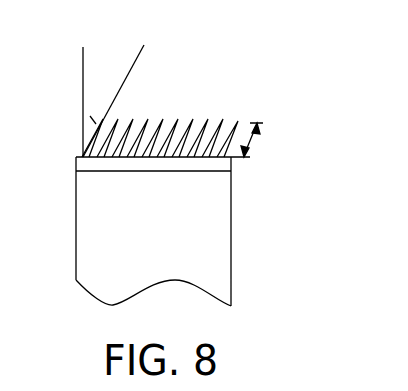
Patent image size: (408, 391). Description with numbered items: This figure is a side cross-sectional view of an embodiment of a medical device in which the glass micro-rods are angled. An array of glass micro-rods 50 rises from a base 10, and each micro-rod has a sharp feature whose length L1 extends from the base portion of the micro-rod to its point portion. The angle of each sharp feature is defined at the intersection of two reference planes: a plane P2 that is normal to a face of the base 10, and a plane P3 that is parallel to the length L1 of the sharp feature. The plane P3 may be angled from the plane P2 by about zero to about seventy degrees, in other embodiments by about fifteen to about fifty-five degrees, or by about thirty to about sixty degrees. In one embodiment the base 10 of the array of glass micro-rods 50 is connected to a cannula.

The base 10 is at (222, 165).
The array of glass micro-rods 50 is at (204, 122).
The plane normal to the base P2 is at (70, 97).
The plane parallel to the length of the sharp feature P3 is at (130, 97).
The length of the sharp feature L1 is at (254, 141).